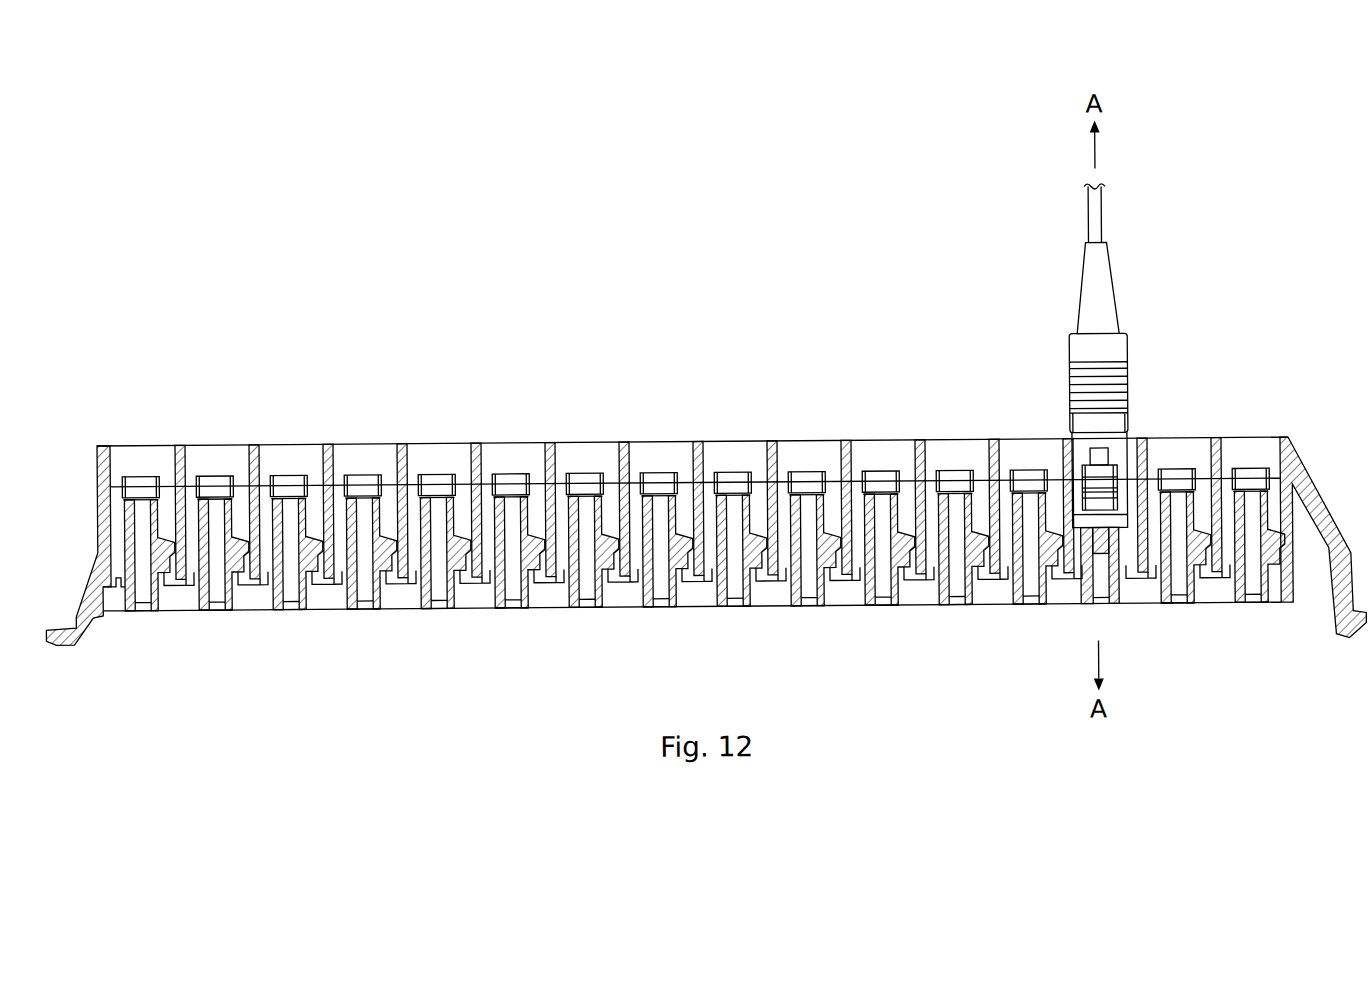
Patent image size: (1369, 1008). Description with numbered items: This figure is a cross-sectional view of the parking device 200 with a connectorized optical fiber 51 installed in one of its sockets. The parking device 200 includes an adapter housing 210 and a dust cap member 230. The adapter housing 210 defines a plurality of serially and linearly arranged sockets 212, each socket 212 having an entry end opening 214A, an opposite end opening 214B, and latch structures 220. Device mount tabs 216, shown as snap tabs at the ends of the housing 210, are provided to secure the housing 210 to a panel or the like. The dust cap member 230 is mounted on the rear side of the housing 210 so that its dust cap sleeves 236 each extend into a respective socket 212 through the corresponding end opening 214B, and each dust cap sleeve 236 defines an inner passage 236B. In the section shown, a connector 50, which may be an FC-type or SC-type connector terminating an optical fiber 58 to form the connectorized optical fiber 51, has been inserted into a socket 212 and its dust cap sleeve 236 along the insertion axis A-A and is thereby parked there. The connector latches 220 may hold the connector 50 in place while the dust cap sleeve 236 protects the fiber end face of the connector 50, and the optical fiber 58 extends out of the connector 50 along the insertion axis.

The parking device 200 is at (150, 292).
The adapter housing 210 is at (84, 477).
The entry end opening 214A is at (140, 446).
The opposite end opening 214B is at (120, 617).
The device mount tabs 216 is at (55, 646).
The latch structures 220 is at (208, 488).
The dust cap member 230 is at (453, 624).
The socket 212 is at (1056, 438).
The connector 50 is at (1128, 393).
The connectorized optical fiber 51 is at (1050, 386).
The optical fiber 58 is at (1100, 233).
The dust cap sleeve 236 is at (1090, 595).
The inner passage 236B is at (1103, 591).